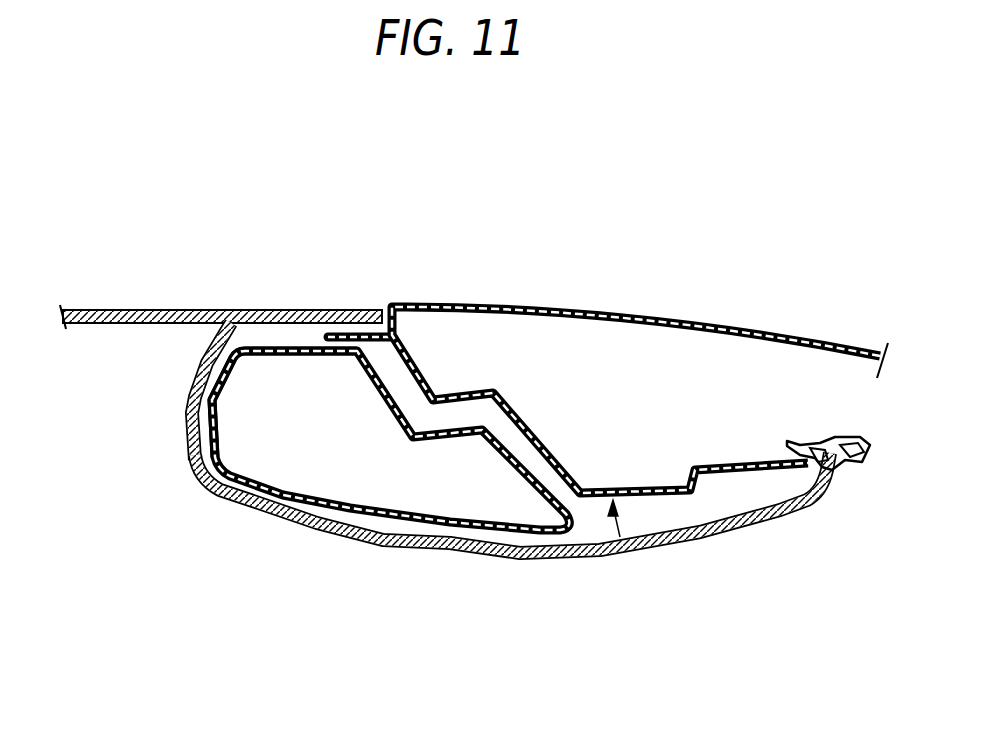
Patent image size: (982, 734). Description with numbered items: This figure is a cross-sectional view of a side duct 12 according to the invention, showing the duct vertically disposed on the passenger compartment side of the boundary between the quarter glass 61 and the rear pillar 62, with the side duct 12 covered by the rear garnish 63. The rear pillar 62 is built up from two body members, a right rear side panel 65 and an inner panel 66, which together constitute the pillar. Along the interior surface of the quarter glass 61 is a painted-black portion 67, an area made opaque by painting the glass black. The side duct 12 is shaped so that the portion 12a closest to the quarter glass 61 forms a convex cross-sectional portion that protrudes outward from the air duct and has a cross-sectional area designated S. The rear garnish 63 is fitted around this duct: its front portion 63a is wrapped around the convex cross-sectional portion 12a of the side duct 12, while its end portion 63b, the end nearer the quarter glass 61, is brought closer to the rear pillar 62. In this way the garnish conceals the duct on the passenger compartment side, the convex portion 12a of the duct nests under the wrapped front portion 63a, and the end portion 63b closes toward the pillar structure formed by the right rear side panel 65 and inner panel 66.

The quarter glass 61 is at (125, 308).
The end portion of rear garnish 63b is at (218, 308).
The right rear side panel 65 is at (638, 304).
The front portion of rear garnish 63a is at (183, 407).
The rear garnish 63 is at (323, 533).
The side duct 12 is at (470, 530).
The portion of side duct 12a is at (270, 330).
The painted-black portion 67 is at (190, 397).
The rear pillar 62 is at (620, 537).
The inner panel 66 is at (715, 472).